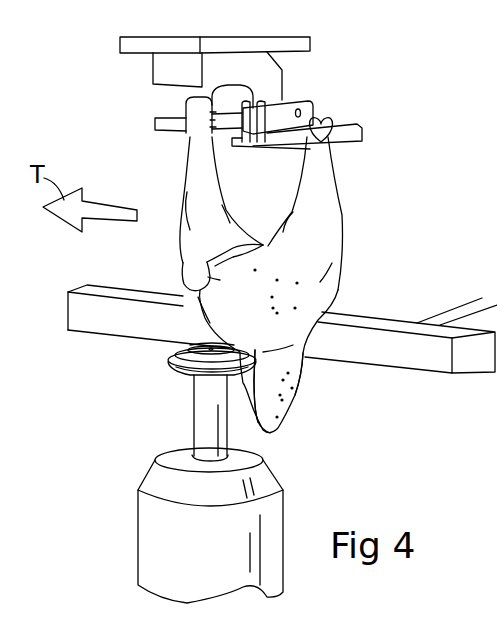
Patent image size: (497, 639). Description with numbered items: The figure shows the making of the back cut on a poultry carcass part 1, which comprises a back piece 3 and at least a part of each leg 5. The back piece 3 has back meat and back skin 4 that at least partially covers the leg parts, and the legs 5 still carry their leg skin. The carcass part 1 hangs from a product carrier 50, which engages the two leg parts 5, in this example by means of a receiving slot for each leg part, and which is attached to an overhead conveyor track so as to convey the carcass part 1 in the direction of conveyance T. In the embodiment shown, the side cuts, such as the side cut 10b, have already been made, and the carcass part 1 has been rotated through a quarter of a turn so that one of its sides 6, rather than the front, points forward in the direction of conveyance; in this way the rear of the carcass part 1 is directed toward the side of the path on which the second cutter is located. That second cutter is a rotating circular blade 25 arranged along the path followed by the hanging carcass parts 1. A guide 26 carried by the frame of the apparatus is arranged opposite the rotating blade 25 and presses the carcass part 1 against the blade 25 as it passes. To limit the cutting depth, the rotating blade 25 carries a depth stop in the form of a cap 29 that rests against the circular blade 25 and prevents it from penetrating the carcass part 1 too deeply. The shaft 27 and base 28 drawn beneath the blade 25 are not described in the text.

The carcass part 1 is at (354, 158).
The back piece 3 is at (278, 406).
The back skin 4 is at (279, 394).
The leg 5 is at (177, 217).
The side 6 is at (194, 313).
The side cut 10b is at (307, 339).
The rotating blade 25 is at (172, 370).
The guide 26 is at (392, 362).
The shaft 27 is at (205, 407).
The base actuator 28 is at (144, 511).
The cap 29 is at (195, 342).
The product carrier 50 is at (283, 76).